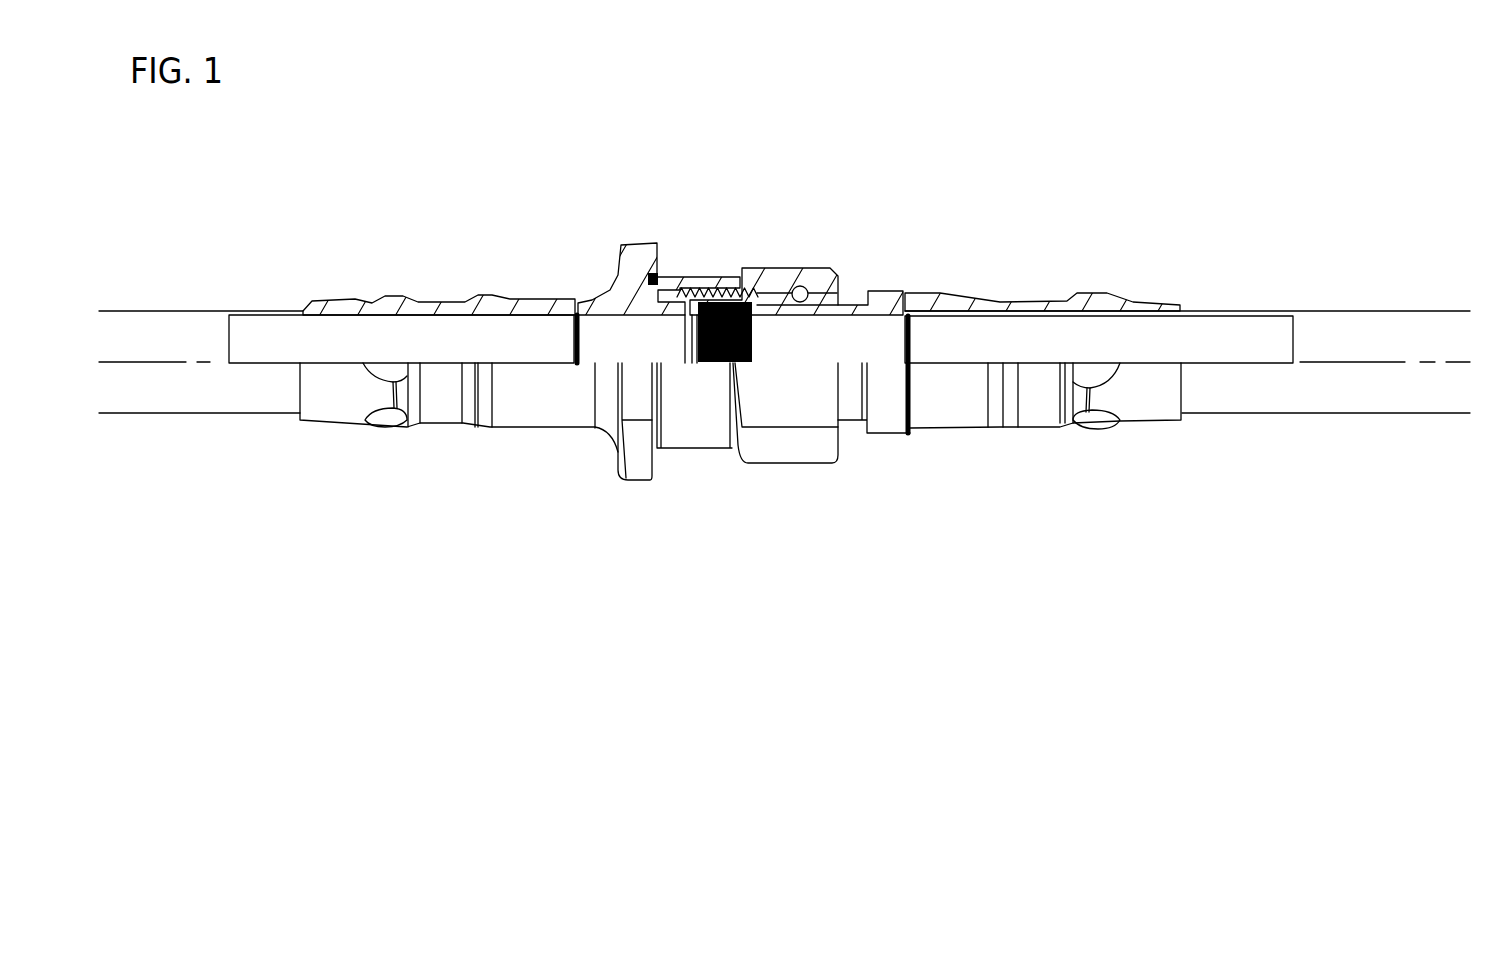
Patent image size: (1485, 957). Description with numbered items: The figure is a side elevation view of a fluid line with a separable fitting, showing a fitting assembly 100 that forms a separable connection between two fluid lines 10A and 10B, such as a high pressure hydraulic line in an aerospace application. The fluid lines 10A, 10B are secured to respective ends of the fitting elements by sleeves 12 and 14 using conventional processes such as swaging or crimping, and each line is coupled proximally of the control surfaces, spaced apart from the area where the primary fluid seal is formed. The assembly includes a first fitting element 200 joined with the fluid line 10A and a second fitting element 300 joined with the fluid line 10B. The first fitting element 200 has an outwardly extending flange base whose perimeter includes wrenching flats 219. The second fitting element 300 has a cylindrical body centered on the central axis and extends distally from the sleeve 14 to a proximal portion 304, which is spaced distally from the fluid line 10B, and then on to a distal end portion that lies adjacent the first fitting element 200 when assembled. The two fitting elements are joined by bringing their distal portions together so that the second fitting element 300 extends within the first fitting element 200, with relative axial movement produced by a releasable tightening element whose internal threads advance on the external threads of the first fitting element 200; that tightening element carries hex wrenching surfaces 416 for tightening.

The fitting assembly 100 is at (673, 331).
The fluid line 10A is at (358, 370).
The fluid line 10B is at (1187, 370).
The sleeve 12 is at (327, 385).
The sleeve 14 is at (1165, 380).
The first fitting element 200 is at (566, 378).
The wrenching flats 219 is at (632, 465).
The second fitting element 300 is at (816, 380).
The proximal portion 304 is at (910, 450).
The hex wrenching surfaces 416 is at (803, 455).